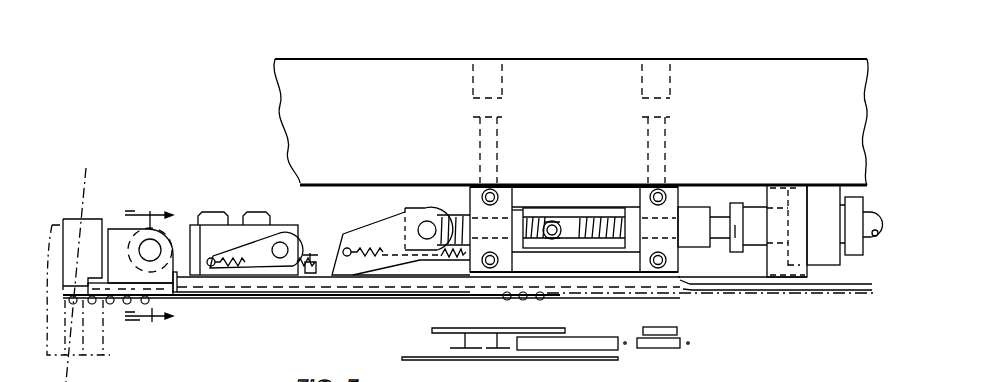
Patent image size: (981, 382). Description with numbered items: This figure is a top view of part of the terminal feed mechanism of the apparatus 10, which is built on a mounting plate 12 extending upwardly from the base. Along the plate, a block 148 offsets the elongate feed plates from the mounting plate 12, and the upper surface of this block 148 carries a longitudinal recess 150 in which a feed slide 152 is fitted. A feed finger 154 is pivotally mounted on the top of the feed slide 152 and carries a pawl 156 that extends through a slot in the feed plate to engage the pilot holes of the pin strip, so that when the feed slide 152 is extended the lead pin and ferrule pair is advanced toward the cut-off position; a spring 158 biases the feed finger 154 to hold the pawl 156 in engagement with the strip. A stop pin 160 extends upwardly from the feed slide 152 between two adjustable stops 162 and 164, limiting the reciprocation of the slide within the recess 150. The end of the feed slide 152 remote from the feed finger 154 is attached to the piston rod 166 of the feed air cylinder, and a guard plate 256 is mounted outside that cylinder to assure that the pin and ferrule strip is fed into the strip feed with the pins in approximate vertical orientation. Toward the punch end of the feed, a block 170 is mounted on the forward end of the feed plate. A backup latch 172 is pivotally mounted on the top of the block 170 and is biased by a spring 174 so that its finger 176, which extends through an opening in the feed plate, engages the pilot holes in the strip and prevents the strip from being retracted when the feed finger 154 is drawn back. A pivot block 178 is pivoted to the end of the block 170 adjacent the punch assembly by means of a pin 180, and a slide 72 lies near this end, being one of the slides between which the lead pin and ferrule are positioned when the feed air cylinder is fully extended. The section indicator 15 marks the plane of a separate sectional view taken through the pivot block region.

The mounting plate 12 is at (368, 60).
The slide 72 is at (78, 261).
The pivot block 178 is at (112, 228).
The pin 180 is at (145, 246).
The section line 15 is at (150, 265).
The spring 174 is at (214, 258).
The block 170 is at (248, 232).
The backup latch 172 is at (286, 237).
The finger 176 is at (190, 300).
The pawl 156 is at (336, 305).
The spring 158 is at (362, 247).
The feed finger 154 is at (397, 215).
The longitudinal recess 150 is at (535, 210).
The block 148 is at (558, 196).
The feed slide 152 is at (575, 212).
The adjustable stop 164 is at (602, 222).
The adjustable stop 162 is at (532, 240).
The stop pin 160 is at (558, 238).
The guard plate 256 is at (743, 291).
The piston rod 166 is at (873, 237).
The apparatus 10 is at (241, 377).